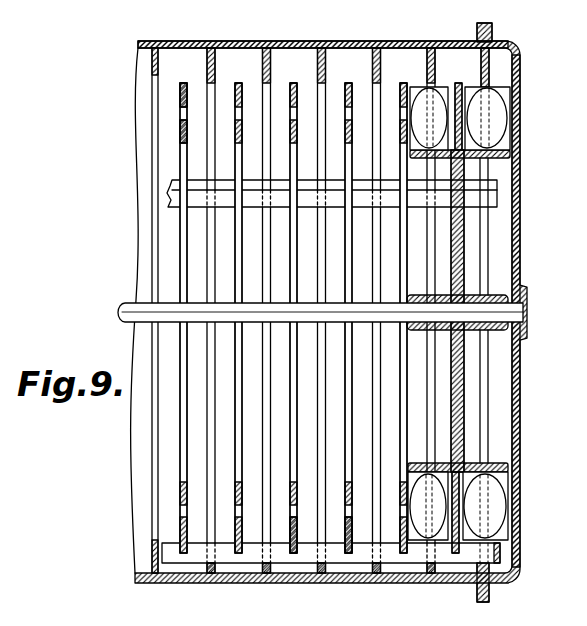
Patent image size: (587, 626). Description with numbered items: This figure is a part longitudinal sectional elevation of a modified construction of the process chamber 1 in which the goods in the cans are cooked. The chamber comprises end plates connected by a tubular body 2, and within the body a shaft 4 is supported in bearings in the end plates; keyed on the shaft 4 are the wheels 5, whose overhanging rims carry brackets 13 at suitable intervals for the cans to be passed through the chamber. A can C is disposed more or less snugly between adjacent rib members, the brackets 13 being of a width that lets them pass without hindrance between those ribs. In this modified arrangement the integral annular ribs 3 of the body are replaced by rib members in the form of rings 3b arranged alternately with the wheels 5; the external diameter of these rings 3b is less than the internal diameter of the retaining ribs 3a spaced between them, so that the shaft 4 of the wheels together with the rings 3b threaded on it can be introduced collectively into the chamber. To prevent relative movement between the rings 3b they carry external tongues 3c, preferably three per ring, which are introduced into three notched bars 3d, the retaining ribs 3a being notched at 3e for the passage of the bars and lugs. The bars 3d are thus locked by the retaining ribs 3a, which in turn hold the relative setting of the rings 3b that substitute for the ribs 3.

The process chamber 1 is at (329, 299).
The tubular body 2 is at (408, 43).
The annular ribs 3 is at (178, 395).
The short ribs 3a is at (218, 52).
The rings 3b is at (182, 152).
The external tongues 3c is at (298, 548).
The notched bars 3d is at (473, 553).
The notches 3e is at (207, 563).
The shaft 4 is at (130, 306).
The wheels 5 is at (463, 260).
The brackets 13 is at (502, 475).
The can C is at (498, 510).